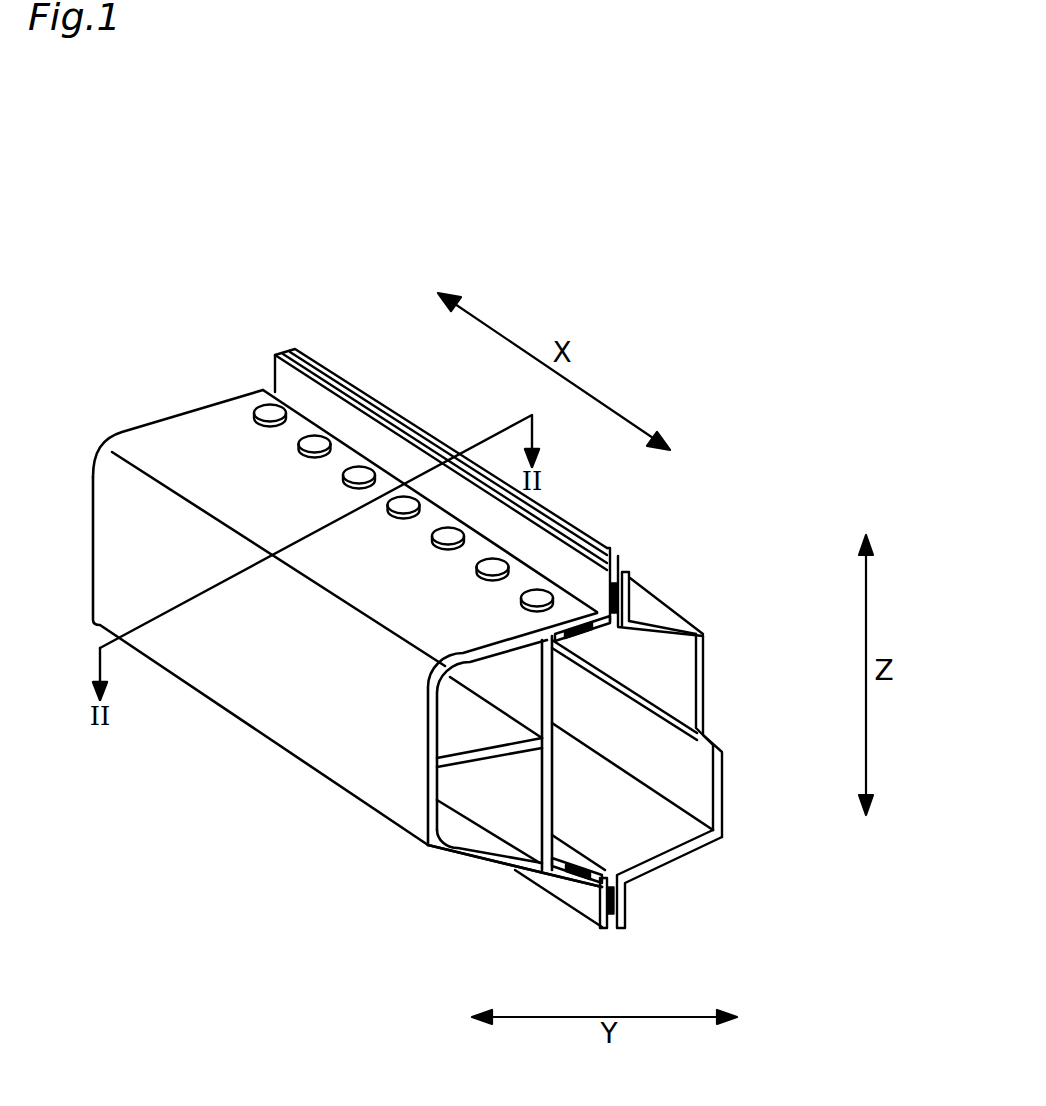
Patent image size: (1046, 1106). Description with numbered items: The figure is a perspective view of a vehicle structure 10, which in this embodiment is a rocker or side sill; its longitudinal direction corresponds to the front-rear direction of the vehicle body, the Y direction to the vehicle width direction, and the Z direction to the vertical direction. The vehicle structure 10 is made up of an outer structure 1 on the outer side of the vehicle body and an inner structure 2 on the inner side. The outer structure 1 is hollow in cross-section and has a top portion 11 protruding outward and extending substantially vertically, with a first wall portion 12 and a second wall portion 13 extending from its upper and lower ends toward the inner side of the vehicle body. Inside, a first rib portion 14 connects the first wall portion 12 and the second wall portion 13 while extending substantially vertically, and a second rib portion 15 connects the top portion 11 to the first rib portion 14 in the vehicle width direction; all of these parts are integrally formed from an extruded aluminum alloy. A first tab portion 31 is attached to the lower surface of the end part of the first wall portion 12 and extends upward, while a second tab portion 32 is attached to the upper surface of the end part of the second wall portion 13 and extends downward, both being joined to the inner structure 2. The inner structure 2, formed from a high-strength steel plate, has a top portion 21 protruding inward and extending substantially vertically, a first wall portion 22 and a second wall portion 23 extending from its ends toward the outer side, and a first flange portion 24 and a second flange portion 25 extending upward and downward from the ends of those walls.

The outer structure 1 is at (108, 400).
The inner structure 2 is at (748, 597).
The vehicle structure 10 is at (239, 243).
The top portion 11 is at (257, 670).
The first wall portion 12 is at (327, 492).
The second wall portion 13 is at (482, 855).
The first rib portion 14 is at (553, 710).
The second rib portion 15 is at (477, 760).
The top portion 21 is at (700, 670).
The first wall portion 22 is at (660, 612).
The second wall portion 23 is at (690, 862).
The first flange portion 24 is at (632, 578).
The second flange portion 25 is at (622, 905).
The first tab portion 31 is at (567, 532).
The second tab portion 32 is at (603, 905).